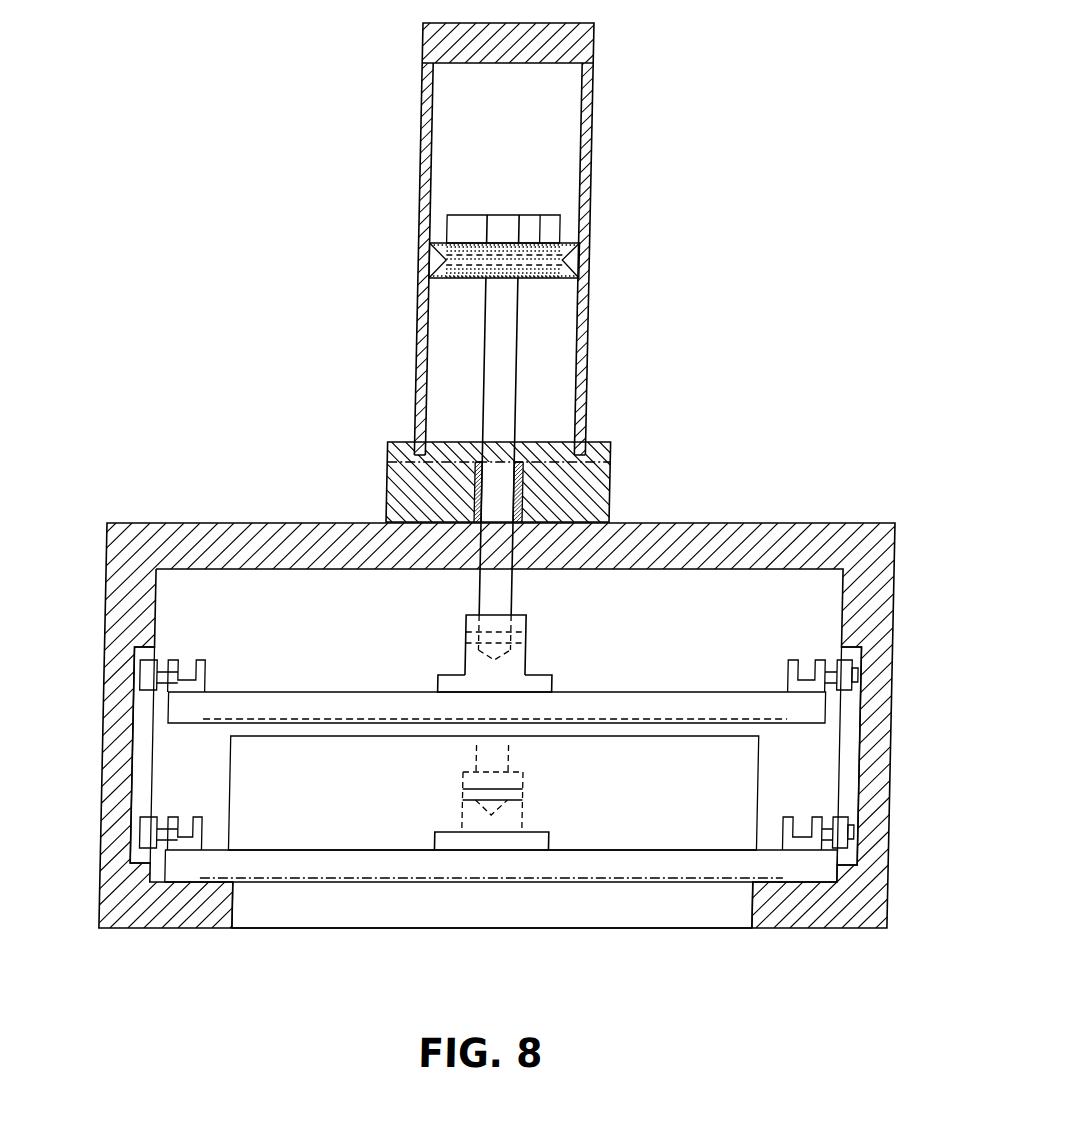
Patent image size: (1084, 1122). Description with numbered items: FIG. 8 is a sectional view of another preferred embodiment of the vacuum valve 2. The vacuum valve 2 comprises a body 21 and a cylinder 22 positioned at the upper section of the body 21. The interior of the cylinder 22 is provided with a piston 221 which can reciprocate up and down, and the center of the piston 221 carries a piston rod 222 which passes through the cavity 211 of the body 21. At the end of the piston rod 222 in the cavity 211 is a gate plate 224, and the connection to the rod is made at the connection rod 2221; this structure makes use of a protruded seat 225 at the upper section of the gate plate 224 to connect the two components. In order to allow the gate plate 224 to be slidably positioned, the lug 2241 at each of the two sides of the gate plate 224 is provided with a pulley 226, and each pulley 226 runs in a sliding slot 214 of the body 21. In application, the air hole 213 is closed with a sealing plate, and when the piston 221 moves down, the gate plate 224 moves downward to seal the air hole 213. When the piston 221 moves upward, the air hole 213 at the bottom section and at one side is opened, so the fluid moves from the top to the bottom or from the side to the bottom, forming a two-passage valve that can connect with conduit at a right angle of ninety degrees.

The vacuum valve 2 is at (729, 354).
The body 21 is at (338, 540).
The cavity 211 is at (679, 611).
The air hole 213 is at (235, 785).
The sliding slot 214 is at (852, 781).
The cylinder 22 is at (587, 362).
The piston 221 is at (586, 270).
The piston rod 222 is at (513, 413).
The connection rod 2221 is at (528, 614).
The gate plate 224 is at (250, 703).
The lug 2241 is at (203, 672).
The protruded seat 225 is at (518, 672).
The pulley 226 is at (148, 667).